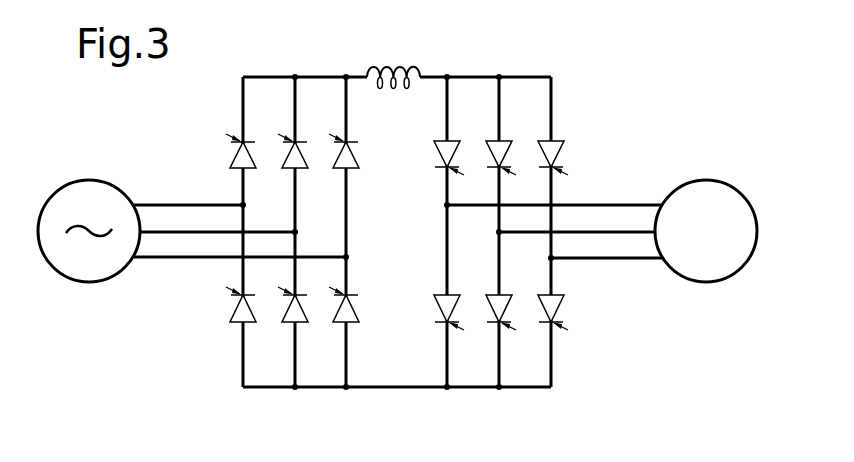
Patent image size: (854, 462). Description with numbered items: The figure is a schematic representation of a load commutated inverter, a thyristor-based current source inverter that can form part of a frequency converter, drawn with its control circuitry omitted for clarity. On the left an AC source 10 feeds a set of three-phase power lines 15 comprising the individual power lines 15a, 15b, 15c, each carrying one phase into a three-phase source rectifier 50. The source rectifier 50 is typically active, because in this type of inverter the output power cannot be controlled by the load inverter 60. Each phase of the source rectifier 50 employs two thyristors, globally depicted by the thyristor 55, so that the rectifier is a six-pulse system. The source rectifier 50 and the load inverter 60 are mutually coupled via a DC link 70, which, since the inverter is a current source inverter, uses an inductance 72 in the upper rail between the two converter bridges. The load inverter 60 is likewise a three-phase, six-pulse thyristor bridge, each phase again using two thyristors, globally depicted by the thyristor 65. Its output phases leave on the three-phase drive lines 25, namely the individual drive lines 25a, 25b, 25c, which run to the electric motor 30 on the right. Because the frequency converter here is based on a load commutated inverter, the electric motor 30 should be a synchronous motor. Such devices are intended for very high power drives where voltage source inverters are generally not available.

The AC power source 10 is at (88, 284).
The three-phase input lines 15 is at (214, 198).
The power line 15a is at (202, 258).
The power line 15b is at (211, 230).
The power line 15c is at (140, 204).
The three-phase output lines 25 is at (571, 209).
The drive line 25a is at (646, 203).
The drive line 25b is at (621, 230).
The drive line 25c is at (633, 260).
The electric motor 30 is at (722, 183).
The source rectifier 50 is at (311, 258).
The thyristor 55 is at (352, 160).
The load inverter 60 is at (509, 258).
The thyristor 65 is at (556, 149).
The DC link 70 is at (397, 235).
The inductance 72 is at (392, 70).